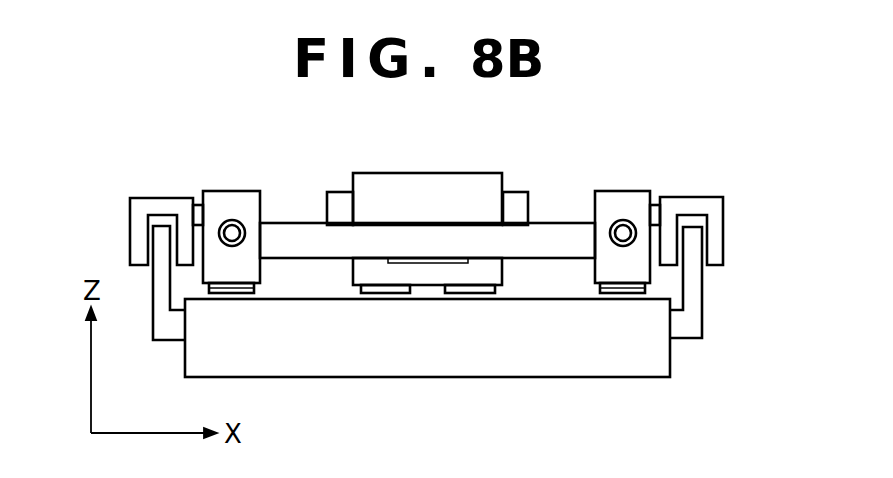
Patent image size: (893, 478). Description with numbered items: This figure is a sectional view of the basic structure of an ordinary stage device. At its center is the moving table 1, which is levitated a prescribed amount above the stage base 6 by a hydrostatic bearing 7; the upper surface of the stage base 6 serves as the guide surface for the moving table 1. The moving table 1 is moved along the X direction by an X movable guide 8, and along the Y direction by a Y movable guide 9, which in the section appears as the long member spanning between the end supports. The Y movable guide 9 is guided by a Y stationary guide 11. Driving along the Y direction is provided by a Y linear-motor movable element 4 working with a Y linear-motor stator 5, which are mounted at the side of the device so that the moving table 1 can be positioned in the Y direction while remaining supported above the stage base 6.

The moving table 1 is at (390, 187).
The Y linear-motor movable element 4 is at (690, 207).
The Y linear-motor stator 5 is at (688, 267).
The stage base 6 is at (293, 350).
The hydrostatic bearing 7 is at (387, 293).
The X movable guide 8 is at (515, 200).
The Y movable guide 9 is at (552, 245).
The Y stationary guide 11 is at (623, 220).